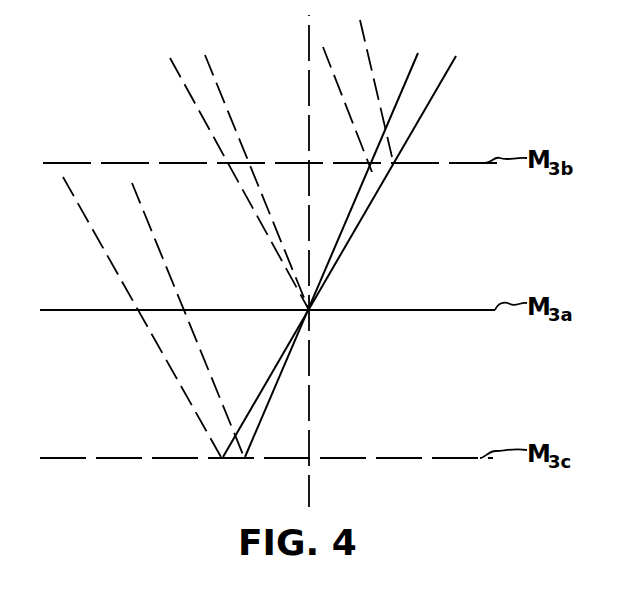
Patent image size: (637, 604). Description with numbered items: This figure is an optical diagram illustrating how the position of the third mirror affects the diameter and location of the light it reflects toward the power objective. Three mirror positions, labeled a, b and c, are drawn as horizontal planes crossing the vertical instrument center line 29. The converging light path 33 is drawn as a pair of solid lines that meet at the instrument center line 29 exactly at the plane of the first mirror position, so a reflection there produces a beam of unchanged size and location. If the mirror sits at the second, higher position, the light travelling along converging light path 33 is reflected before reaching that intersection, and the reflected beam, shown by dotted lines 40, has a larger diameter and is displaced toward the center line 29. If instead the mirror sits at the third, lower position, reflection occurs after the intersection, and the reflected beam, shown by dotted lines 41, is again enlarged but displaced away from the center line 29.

The instrument center line 29 is at (309, 345).
The converging light path 33 is at (410, 130).
The dotted lines 40 is at (378, 107).
The dotted lines 41 is at (197, 343).